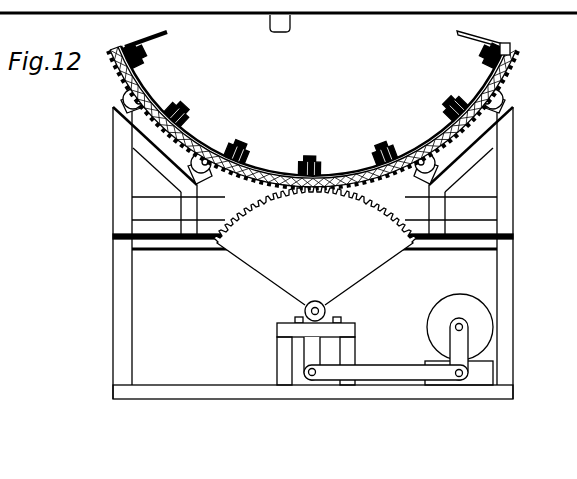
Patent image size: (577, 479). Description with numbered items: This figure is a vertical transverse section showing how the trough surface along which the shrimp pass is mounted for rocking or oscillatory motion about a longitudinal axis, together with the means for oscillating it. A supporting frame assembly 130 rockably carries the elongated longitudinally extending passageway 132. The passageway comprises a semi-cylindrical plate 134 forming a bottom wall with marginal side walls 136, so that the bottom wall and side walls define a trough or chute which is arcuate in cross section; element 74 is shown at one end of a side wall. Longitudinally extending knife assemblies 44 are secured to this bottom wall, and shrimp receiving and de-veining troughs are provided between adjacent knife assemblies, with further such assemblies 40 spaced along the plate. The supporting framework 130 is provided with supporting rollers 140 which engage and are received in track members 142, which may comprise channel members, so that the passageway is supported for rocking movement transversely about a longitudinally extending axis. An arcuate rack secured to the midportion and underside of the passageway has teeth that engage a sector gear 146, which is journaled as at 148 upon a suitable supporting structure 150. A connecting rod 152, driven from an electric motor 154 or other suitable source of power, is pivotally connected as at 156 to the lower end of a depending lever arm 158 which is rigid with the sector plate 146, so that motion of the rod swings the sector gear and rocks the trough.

The supporting frame assembly 130 is at (110, 185).
The passageway 132 is at (118, 48).
The semi-cylindrical plate 134 is at (331, 117).
The marginal side walls 136 is at (150, 36).
The stop block 74 is at (511, 50).
The track members 142 is at (503, 75).
The supporting rollers 140 is at (128, 92).
The knife assemblies 44 is at (242, 148).
The carriage 40 is at (380, 152).
The sector gear 146 is at (245, 242).
The journal 148 is at (321, 303).
The supporting structure 150 is at (282, 330).
The connecting rod 152 is at (395, 362).
The electric motor 154 is at (485, 325).
The pivotal connection 156 is at (320, 370).
The depending lever arm 158 is at (310, 348).